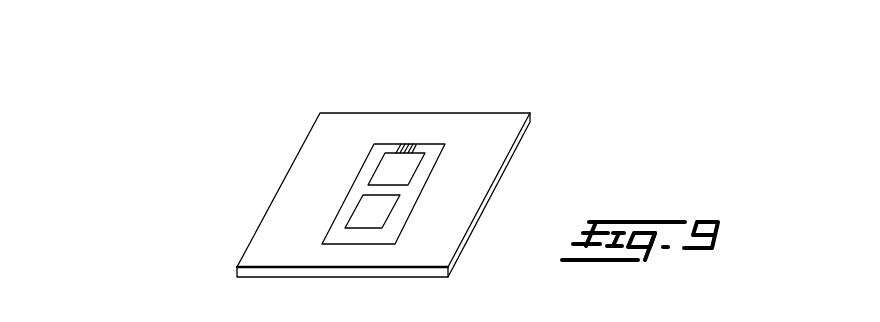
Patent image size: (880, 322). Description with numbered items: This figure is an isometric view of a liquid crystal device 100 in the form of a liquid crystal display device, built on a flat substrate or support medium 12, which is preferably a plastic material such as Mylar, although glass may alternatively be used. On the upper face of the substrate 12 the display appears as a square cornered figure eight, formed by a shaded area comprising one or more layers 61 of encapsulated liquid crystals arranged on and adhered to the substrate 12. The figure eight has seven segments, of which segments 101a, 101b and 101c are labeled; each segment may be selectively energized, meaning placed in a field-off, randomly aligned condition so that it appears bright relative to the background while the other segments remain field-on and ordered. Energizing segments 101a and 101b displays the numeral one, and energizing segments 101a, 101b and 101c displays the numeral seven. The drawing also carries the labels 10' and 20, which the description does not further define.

The substrate 12 is at (279, 189).
The sensor assembly 20 is at (383, 76).
The layers of encapsulated liquid crystals 61 is at (383, 147).
The sensor device 10' is at (416, 149).
The liquid crystal device 100 is at (406, 163).
The segment 101a is at (430, 167).
The segment 101b is at (405, 213).
The segment 101c is at (437, 148).